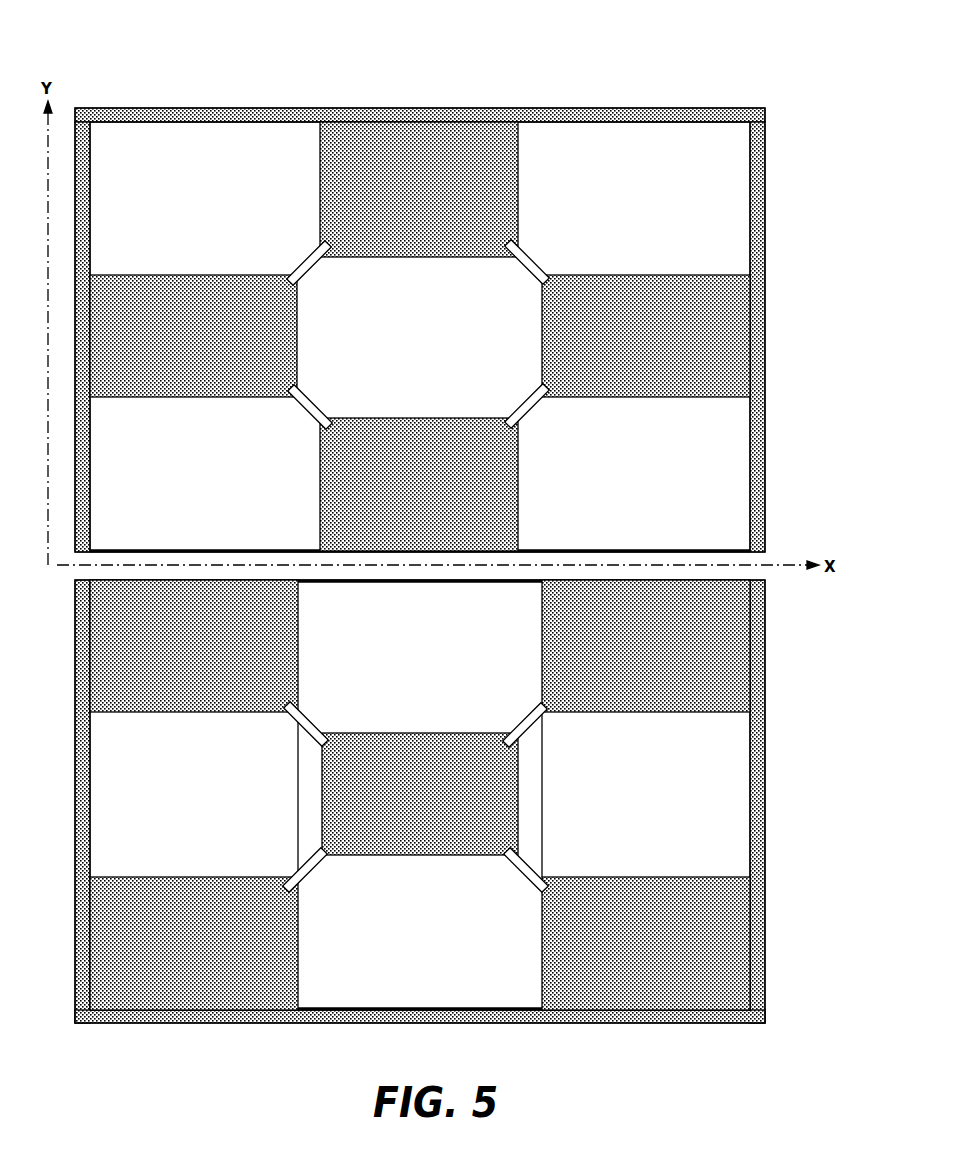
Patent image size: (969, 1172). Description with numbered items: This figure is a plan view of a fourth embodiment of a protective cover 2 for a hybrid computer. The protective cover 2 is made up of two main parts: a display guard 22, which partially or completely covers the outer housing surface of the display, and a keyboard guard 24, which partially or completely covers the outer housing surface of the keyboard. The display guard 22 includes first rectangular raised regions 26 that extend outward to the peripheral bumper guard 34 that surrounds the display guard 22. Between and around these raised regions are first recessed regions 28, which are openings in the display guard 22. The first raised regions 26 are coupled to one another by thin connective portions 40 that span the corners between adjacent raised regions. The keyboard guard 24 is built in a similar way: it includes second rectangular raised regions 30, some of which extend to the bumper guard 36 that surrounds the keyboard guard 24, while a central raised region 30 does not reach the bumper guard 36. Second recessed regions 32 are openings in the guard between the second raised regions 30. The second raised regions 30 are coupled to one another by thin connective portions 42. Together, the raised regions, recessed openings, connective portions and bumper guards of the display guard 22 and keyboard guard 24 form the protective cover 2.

The protective cover 2 is at (452, 553).
The display guard 22 is at (451, 312).
The keyboard guard 24 is at (452, 821).
The first raised regions 26 is at (454, 141).
The first recessed regions 28 is at (215, 131).
The second raised regions 30 is at (673, 997).
The second recessed regions 32 is at (466, 997).
The peripheral bumper guard 34 is at (653, 108).
The bumper guard 36 is at (178, 1024).
The thin connective portions 40 is at (306, 260).
The thin connective portions 42 is at (312, 870).